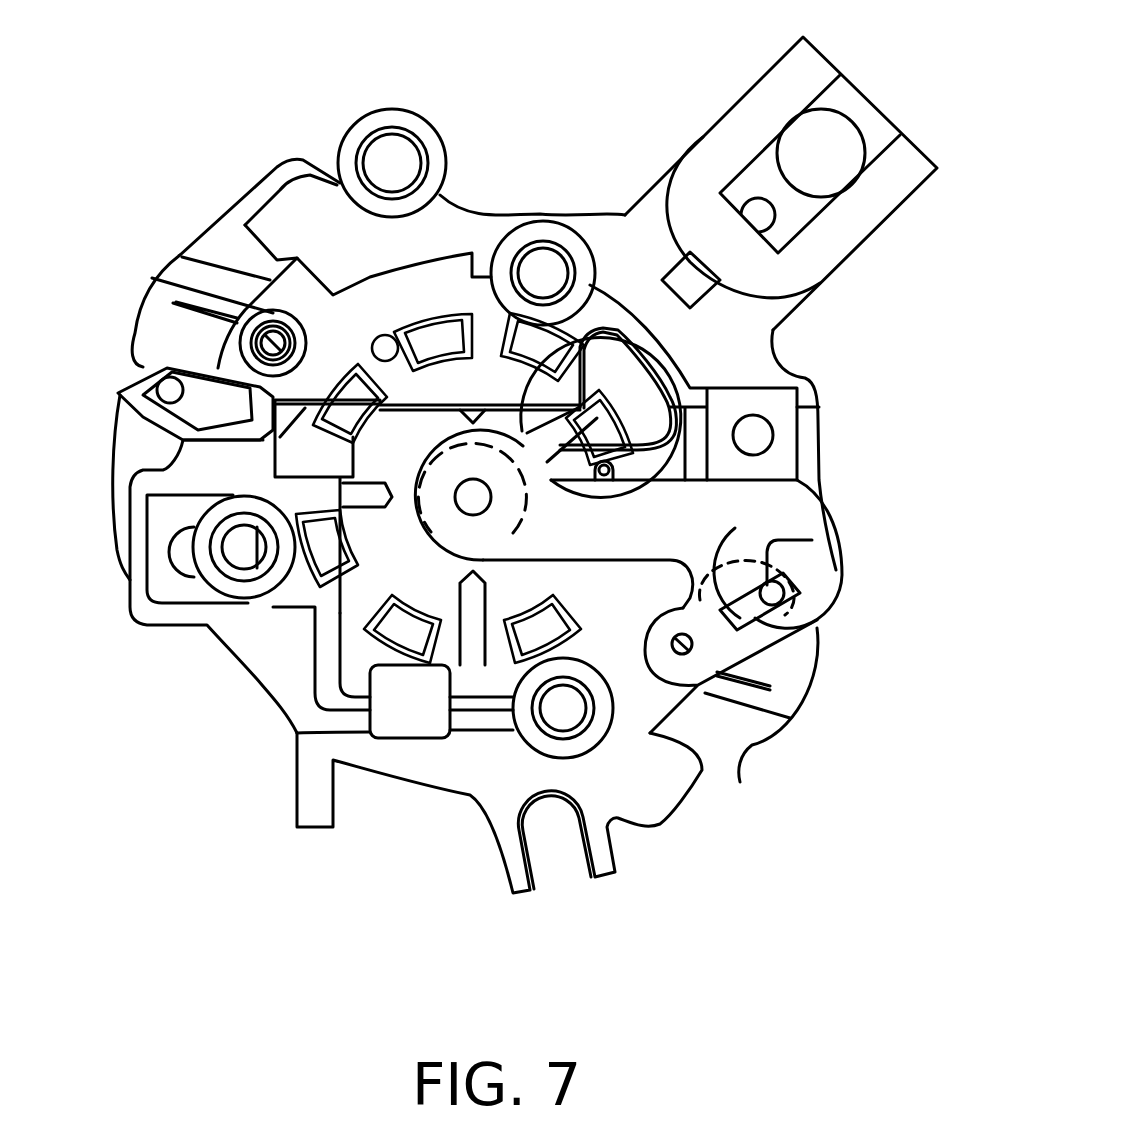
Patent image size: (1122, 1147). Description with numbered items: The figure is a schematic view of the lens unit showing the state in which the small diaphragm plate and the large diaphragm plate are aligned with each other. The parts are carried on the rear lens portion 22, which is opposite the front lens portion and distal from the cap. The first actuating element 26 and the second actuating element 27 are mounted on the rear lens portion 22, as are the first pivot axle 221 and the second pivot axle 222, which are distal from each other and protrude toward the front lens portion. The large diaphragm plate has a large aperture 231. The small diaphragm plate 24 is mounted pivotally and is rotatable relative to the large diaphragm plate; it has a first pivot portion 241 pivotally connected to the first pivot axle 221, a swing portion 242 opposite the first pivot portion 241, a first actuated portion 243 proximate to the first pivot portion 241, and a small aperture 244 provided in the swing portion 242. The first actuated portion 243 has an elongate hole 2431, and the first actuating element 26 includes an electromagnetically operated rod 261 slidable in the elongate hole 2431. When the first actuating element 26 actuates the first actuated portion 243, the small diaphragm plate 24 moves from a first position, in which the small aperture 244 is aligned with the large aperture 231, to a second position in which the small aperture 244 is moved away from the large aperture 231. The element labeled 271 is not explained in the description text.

The rear lens portion 22 is at (538, 212).
The second pivot axle 222 is at (270, 335).
The second actuating element 27 is at (148, 285).
The pocket 271 is at (160, 387).
The small diaphragm plate 24 is at (776, 476).
The elongate hole 2431 is at (807, 493).
The first actuated portion 243 is at (772, 545).
The electromagnetically operated rod 261 is at (780, 590).
The first actuating element 26 is at (817, 648).
The first pivot axle 221 is at (693, 648).
The first pivot portion 241 is at (690, 655).
The small aperture 244 is at (460, 503).
The swing portion 242 is at (433, 543).
The large aperture 231 is at (492, 535).